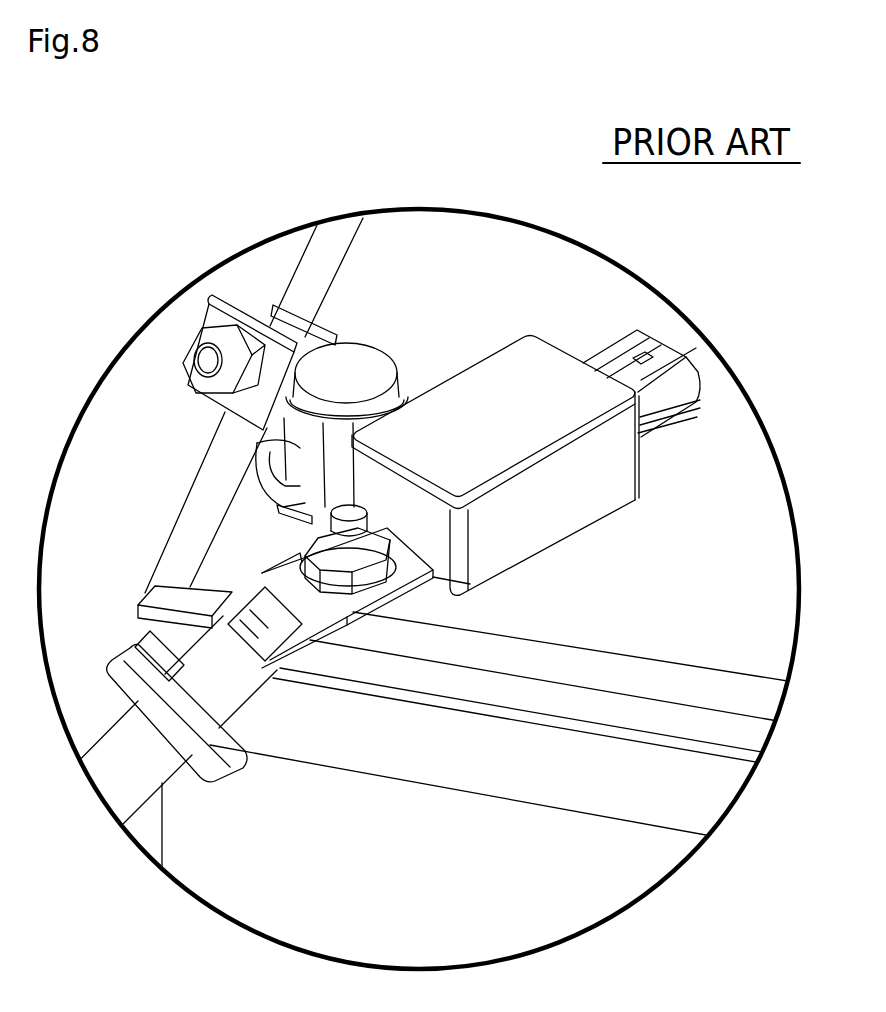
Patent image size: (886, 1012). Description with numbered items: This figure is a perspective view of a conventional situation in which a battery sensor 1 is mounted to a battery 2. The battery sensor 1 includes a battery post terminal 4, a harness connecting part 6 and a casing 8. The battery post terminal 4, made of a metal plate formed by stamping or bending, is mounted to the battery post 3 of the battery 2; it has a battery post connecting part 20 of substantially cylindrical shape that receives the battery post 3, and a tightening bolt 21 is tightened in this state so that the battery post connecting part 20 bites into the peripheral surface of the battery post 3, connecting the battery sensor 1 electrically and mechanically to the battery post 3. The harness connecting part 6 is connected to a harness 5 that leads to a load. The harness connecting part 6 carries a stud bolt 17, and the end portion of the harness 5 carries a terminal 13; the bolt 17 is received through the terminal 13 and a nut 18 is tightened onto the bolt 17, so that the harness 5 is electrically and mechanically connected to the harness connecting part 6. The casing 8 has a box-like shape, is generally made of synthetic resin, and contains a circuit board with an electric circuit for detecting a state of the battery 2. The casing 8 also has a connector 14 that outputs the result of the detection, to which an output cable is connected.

The battery sensor 1 is at (548, 320).
The battery 2 is at (658, 610).
The battery post 3 is at (360, 368).
The battery post terminal 4 is at (163, 337).
The harness 5 is at (100, 777).
The harness connecting part 6 is at (403, 588).
The casing 8 is at (645, 466).
The terminal 13 is at (298, 555).
The connector 14 is at (657, 357).
The bolt 17 is at (355, 510).
The nut 18 is at (378, 522).
The battery post connecting part 20 is at (297, 440).
The tightening bolt 21 is at (190, 372).